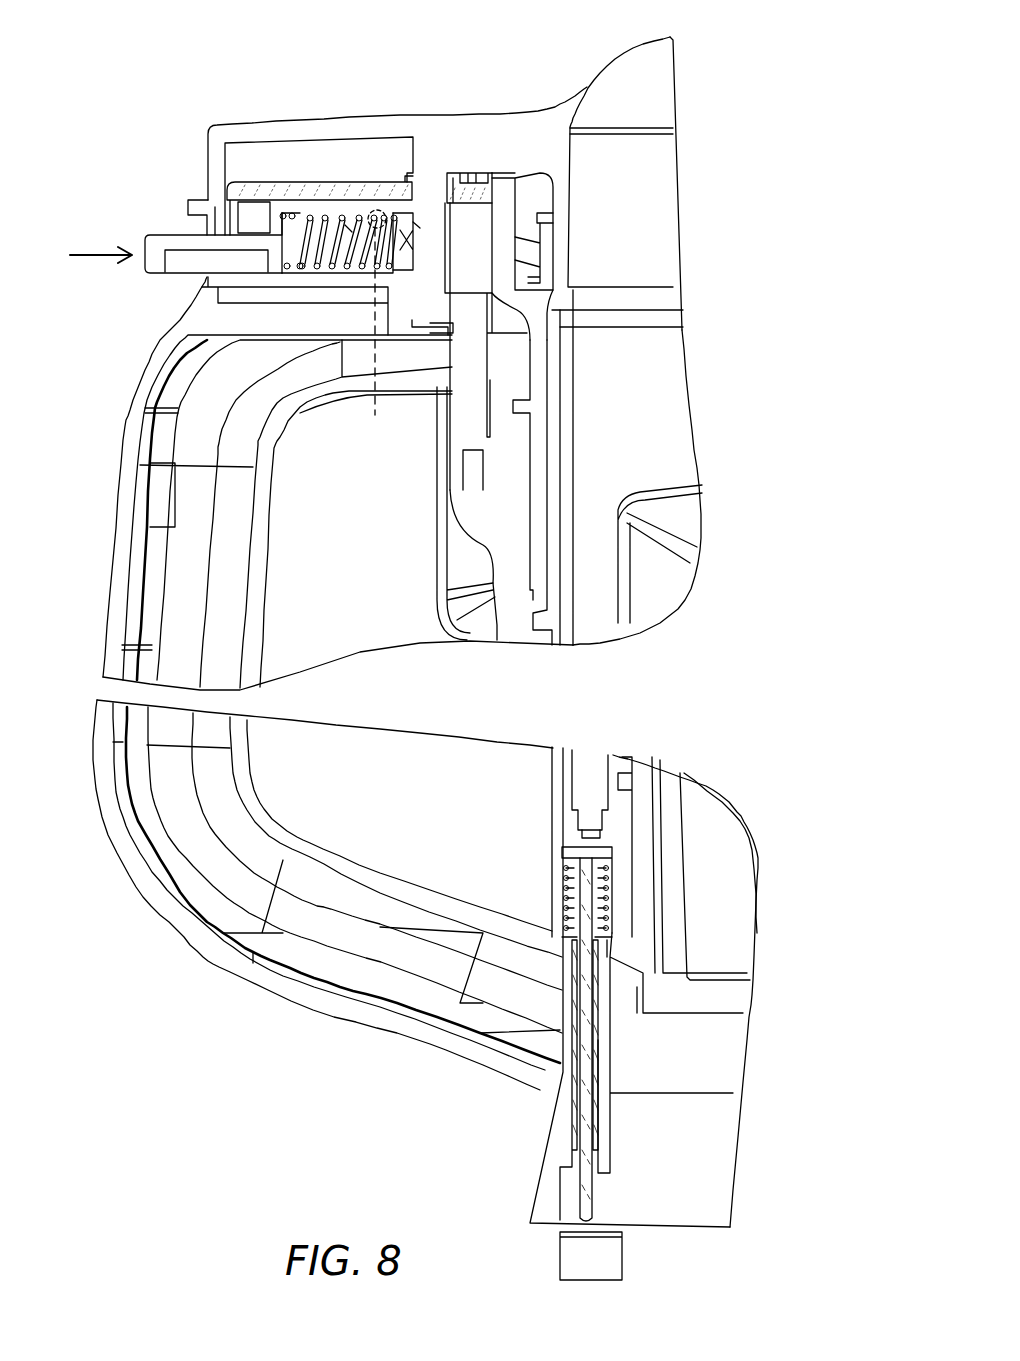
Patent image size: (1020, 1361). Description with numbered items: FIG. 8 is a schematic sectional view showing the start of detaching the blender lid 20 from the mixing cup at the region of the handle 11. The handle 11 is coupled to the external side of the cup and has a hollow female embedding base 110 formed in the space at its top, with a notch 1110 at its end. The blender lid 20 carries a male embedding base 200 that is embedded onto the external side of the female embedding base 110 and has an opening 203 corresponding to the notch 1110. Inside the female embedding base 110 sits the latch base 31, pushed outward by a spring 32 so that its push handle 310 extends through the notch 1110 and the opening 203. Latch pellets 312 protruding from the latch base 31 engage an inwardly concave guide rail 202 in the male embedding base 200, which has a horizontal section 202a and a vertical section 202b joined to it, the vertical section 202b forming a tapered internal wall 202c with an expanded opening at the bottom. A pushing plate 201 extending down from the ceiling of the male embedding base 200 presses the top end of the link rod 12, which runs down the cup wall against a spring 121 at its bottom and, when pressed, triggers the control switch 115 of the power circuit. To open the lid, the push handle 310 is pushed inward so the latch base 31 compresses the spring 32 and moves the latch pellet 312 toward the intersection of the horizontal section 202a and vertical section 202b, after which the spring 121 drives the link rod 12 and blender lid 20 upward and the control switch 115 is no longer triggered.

The handle 11 is at (122, 553).
The link rod 12 is at (473, 353).
The blender lid 20 is at (606, 87).
The latch base 31 is at (277, 220).
The spring 32 is at (323, 217).
The female embedding base 110 is at (290, 187).
The control switch 115 is at (577, 1255).
The spring 121 is at (615, 898).
The male embedding base 200 is at (243, 138).
The pushing plate 201 is at (440, 210).
The guide rail 202 is at (455, 52).
The horizontal section 202a is at (345, 227).
The vertical section 202b is at (415, 222).
The tapered internal wall 202c is at (377, 208).
The opening 203 is at (215, 225).
The push handle 310 is at (163, 242).
The latch pellet 312 is at (372, 336).
The notch 1110 is at (233, 263).